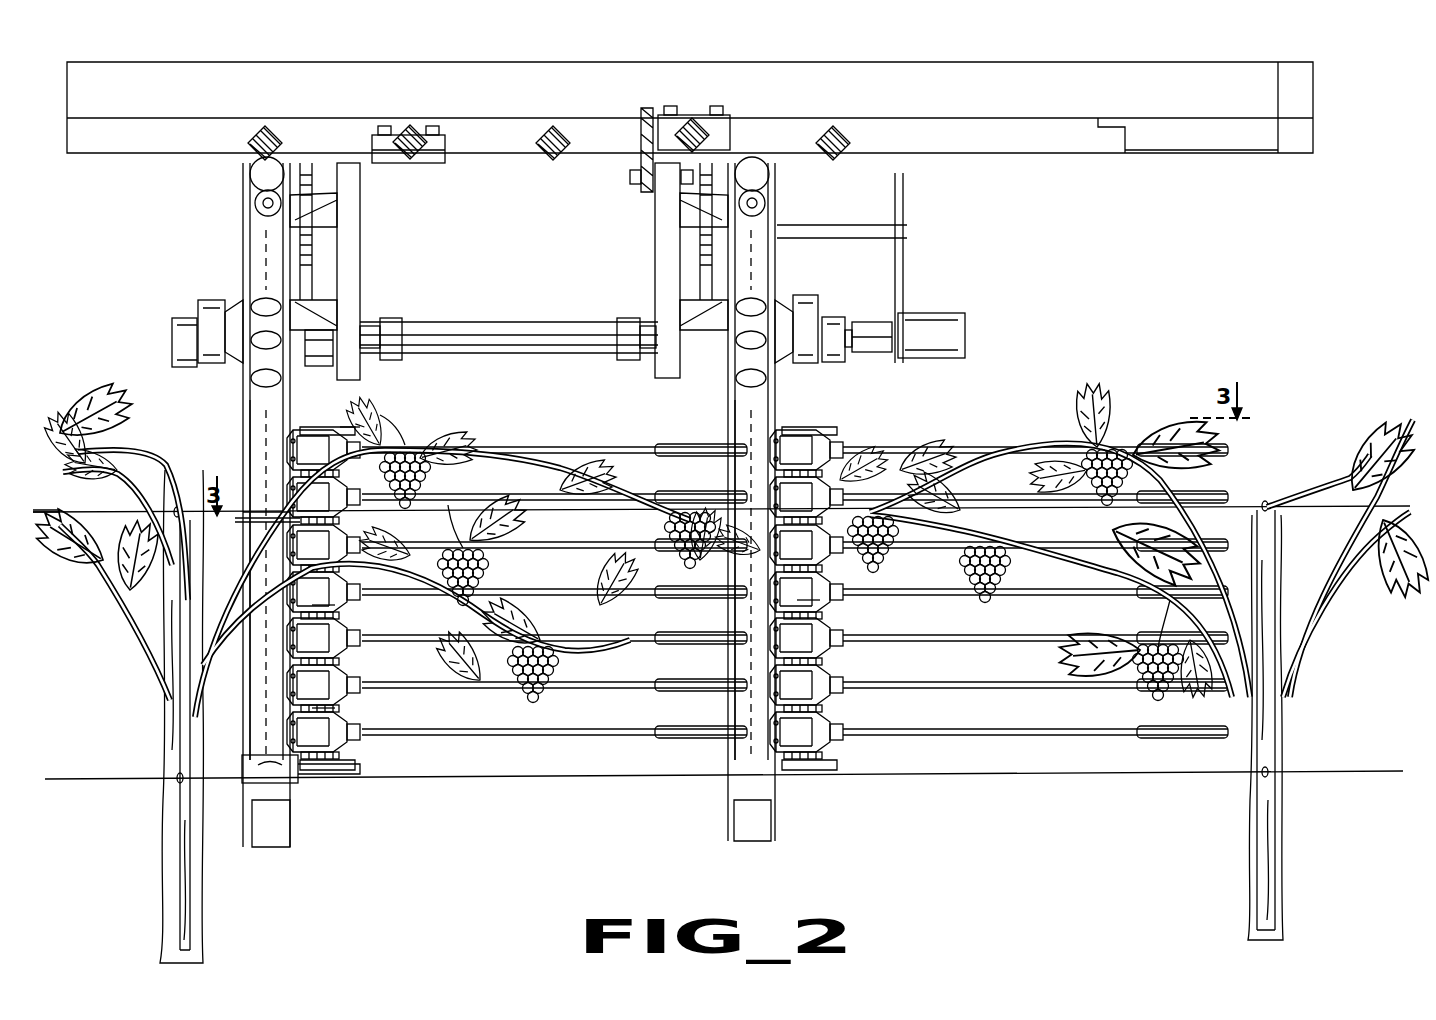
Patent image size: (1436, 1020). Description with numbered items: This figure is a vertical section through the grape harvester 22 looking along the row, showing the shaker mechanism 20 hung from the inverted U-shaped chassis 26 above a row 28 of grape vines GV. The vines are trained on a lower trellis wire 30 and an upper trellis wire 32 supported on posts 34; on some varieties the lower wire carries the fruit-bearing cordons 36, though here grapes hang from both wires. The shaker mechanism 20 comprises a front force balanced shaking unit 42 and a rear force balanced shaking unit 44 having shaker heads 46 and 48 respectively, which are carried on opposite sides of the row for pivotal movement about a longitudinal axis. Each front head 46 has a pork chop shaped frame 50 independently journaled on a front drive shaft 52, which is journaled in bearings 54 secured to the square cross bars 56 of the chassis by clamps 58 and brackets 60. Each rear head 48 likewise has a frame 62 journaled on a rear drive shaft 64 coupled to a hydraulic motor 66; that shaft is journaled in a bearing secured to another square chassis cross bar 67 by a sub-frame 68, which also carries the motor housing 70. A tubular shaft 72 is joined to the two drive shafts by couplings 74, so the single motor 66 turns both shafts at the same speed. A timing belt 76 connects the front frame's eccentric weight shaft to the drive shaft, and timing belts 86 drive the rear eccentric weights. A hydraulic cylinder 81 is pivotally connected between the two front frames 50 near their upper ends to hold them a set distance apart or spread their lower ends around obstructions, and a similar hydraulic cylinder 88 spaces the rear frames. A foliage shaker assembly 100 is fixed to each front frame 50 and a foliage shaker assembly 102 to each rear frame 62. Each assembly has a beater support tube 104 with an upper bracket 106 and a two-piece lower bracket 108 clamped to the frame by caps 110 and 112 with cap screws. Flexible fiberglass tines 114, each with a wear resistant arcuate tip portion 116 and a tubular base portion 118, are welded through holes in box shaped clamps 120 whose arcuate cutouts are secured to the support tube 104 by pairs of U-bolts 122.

The shaker mechanism 20 is at (910, 237).
The grape harvester 22 is at (1197, 58).
The chassis 26 is at (1105, 156).
The rows 28 is at (150, 940).
The lower trellis wire 30 is at (1348, 778).
The upper trellis wire 32 is at (1290, 504).
The posts 34 is at (178, 890).
The cordons 36 is at (180, 690).
The front force balanced shaking unit 42 is at (243, 222).
The rear force balanced shaking unit 44 is at (779, 206).
The front shaker heads 46 is at (258, 162).
The rear shaker heads 48 is at (760, 162).
The frame 50 is at (262, 410).
The front drive shaft 52 is at (368, 330).
The bearings 54 is at (318, 368).
The square cross bars 56 is at (410, 130).
The clamps 58 is at (446, 152).
The brackets 60 is at (333, 318).
The frame 62 is at (768, 390).
The rear drive shaft 64 is at (780, 320).
The hydraulic motor 66 is at (965, 330).
The chassis cross bar 67 is at (690, 128).
The sub-frame 68 is at (654, 240).
The housing 70 is at (905, 326).
The tubular shaft 72 is at (475, 330).
The couplings 74 is at (398, 320).
The timing belt 76 is at (186, 318).
The hydraulic cylinder 81 is at (255, 195).
The timing belts 86 is at (836, 320).
The hydraulic cylinder 88 is at (772, 182).
The foliage shaker assembly 100 is at (476, 578).
The foliage shaker assembly 102 is at (999, 583).
The beater support tube 104 is at (347, 436).
The upper bracket 106 is at (277, 512).
The lower bracket 108 is at (331, 775).
The cap 110 is at (250, 522).
The cap 112 is at (246, 768).
The foliage beater rods or tines 114 is at (522, 452).
The arcuate tip portion 116 is at (670, 495).
The tubular base portion 118 is at (338, 605).
The box shaped clamp 120 is at (293, 692).
The U-bolts 122 is at (340, 708).
The grape vines GV is at (163, 845).